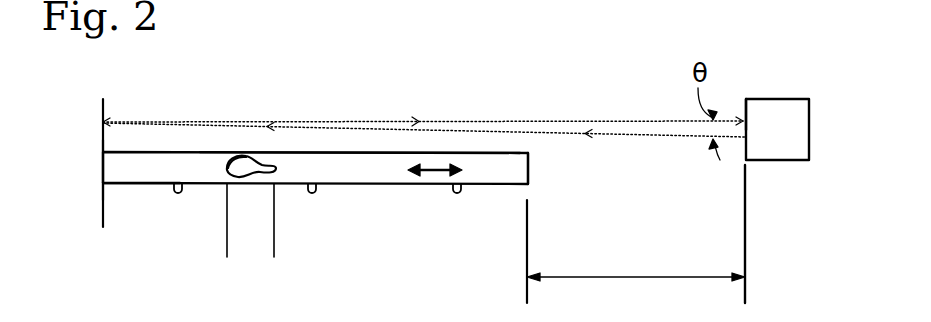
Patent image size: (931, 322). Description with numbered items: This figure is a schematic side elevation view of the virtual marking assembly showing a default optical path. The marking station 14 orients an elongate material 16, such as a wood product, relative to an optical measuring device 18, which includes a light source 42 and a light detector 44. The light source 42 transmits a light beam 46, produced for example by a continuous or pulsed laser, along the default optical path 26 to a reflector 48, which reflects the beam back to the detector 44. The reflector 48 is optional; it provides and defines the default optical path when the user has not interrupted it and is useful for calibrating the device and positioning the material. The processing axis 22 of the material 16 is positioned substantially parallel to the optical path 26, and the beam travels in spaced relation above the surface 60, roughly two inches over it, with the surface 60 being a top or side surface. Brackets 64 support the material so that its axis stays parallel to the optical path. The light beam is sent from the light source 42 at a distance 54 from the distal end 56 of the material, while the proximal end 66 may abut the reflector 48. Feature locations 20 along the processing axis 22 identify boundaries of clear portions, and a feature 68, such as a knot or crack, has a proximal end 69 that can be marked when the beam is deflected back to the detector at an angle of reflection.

The marking station 14 is at (339, 200).
The material 16 is at (145, 184).
The optical measuring device 18 is at (773, 139).
The feature locations 20 is at (274, 240).
The processing axis 22 is at (432, 173).
The default optical path 26 is at (595, 118).
The light source 42 is at (747, 137).
The light detector 44 is at (748, 121).
The light beam 46 is at (662, 137).
The reflector 48 is at (103, 108).
The distance 54 is at (618, 277).
The distal end 56 is at (529, 172).
The surface 60 is at (513, 153).
The brackets 64 is at (178, 193).
The proximal end 66 is at (103, 163).
The feature 68 is at (242, 162).
The proximal end of defect 69 is at (227, 165).